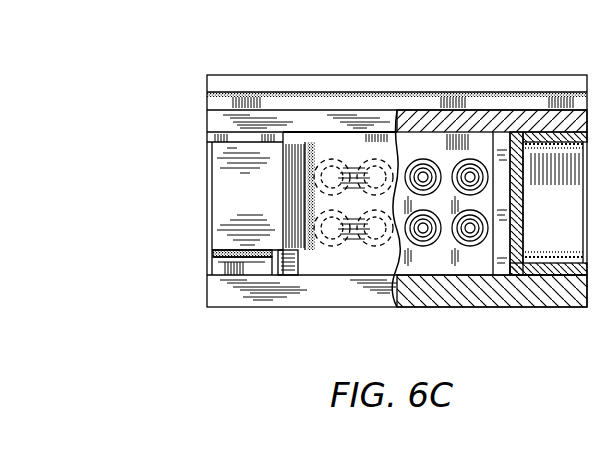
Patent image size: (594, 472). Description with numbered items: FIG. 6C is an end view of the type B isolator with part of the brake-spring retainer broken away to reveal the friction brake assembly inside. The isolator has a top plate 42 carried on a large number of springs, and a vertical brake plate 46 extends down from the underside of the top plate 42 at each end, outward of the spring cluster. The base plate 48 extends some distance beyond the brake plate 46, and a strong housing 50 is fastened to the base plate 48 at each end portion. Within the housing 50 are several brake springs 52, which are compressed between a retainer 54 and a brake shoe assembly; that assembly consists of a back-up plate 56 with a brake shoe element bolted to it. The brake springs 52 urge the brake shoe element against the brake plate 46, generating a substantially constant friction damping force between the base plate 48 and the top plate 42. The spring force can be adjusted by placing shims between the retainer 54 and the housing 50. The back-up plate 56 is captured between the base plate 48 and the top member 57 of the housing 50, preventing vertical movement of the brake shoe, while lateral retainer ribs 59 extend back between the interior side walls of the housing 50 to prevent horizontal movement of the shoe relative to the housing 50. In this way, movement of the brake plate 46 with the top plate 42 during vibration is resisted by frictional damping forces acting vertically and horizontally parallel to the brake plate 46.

The top plate 42 is at (255, 82).
The brake plate 46 is at (214, 98).
The base plate 48 is at (290, 297).
The housing 50 is at (207, 242).
The brake spring 52 is at (473, 158).
The retainer 54 is at (354, 150).
The back-up plate 56 is at (445, 145).
The top member 57 is at (430, 118).
The lateral retainer rib 59 is at (300, 265).